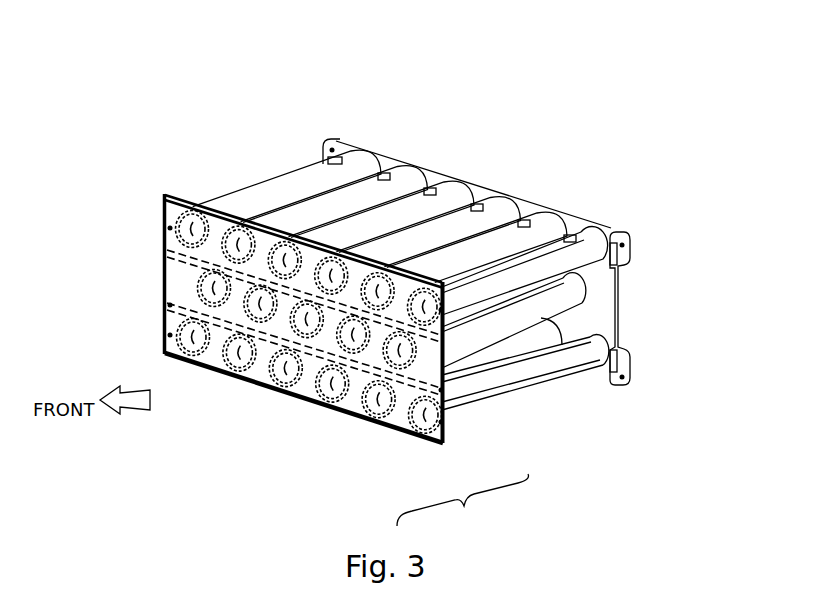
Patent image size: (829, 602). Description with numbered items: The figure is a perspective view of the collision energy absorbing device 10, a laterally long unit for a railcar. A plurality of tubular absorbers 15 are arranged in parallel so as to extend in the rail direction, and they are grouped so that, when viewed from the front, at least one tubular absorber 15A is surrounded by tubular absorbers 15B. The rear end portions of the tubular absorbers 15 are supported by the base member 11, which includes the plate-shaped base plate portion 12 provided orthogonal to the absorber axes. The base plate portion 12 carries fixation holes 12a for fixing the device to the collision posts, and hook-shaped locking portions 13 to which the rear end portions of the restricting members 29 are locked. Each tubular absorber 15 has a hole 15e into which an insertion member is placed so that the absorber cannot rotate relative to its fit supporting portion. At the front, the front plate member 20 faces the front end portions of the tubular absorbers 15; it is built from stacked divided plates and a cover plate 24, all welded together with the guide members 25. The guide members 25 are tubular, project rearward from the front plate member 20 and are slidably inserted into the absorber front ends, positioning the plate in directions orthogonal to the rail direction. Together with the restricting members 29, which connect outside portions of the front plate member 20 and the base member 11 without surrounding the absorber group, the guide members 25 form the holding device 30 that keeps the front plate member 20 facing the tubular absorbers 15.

The collision energy absorbing device 10 is at (217, 123).
The base member 11 is at (437, 168).
The base plate portion 12 is at (480, 184).
The fixation hole 12a is at (331, 147).
The locking portion 13 is at (613, 233).
The tubular absorber 15 is at (272, 187).
The tubular absorber 15A is at (290, 398).
The tubular absorber 15B is at (378, 416).
The hole 15e is at (323, 152).
The front plate member 20 is at (164, 194).
The cover plate 24 is at (187, 281).
The guide member 25 is at (201, 210).
The restricting member 29 is at (525, 280).
The holding device 30 is at (463, 508).